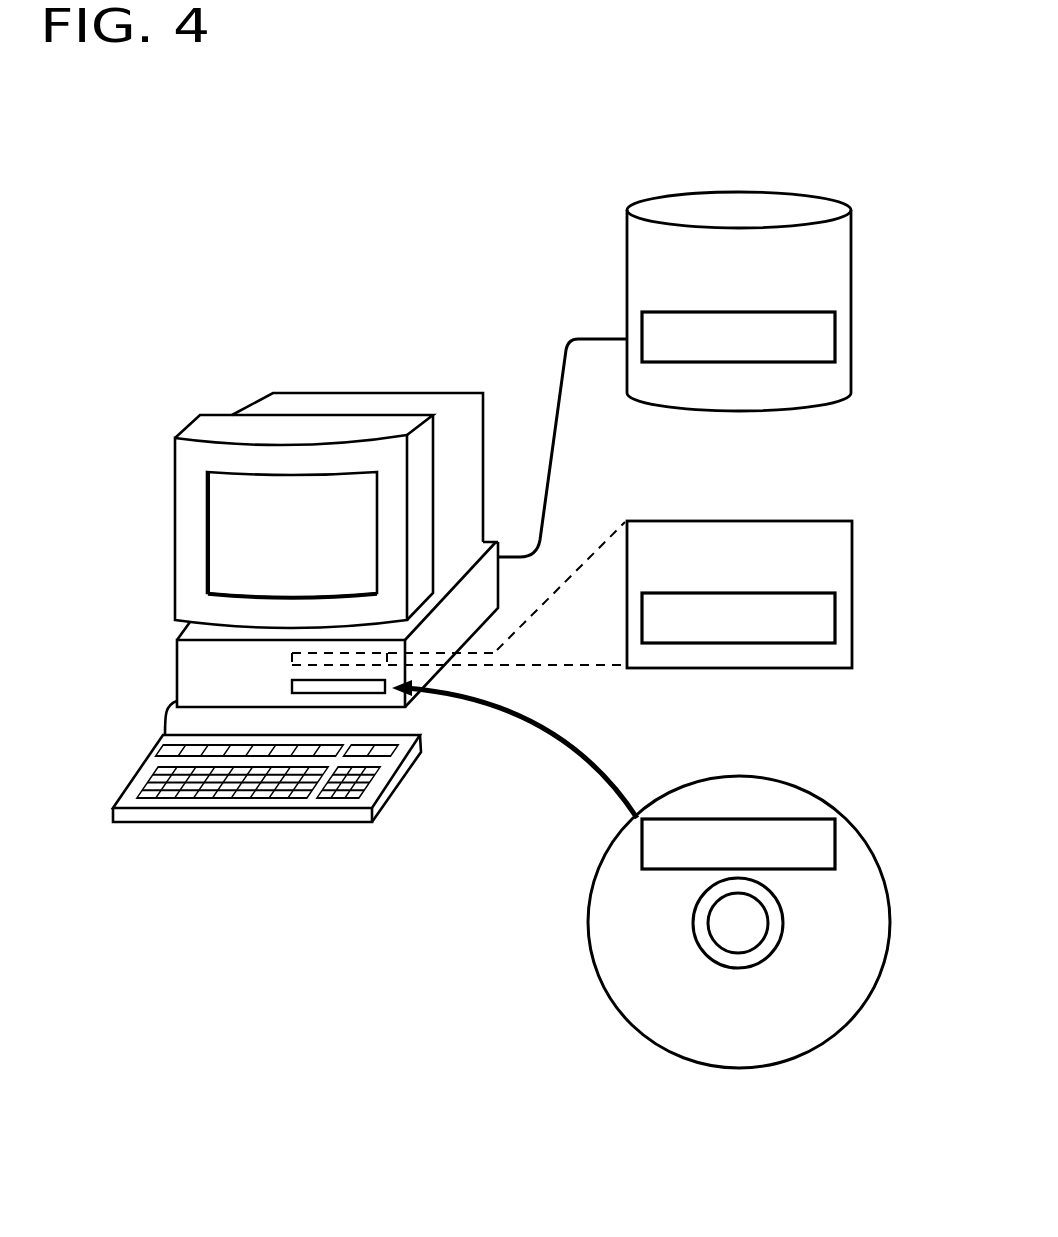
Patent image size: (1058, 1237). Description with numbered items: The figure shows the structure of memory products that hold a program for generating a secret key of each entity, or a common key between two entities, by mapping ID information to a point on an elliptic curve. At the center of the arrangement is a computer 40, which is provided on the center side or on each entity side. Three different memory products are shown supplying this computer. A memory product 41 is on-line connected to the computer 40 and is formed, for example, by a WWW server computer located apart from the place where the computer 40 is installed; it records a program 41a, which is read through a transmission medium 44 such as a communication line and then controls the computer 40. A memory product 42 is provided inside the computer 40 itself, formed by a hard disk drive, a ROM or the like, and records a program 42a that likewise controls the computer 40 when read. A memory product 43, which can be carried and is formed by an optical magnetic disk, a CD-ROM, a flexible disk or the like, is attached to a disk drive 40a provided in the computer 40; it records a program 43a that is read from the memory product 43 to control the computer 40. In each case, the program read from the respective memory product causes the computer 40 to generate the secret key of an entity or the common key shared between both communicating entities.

The computer 40 is at (348, 393).
The disk drive 40a is at (380, 695).
The memory product 41 is at (852, 243).
The program 41a is at (682, 311).
The memory product 42 is at (782, 518).
The program 42a is at (657, 592).
The memory product 43 is at (697, 780).
The program 43a is at (773, 818).
The transmission medium 44 is at (553, 432).